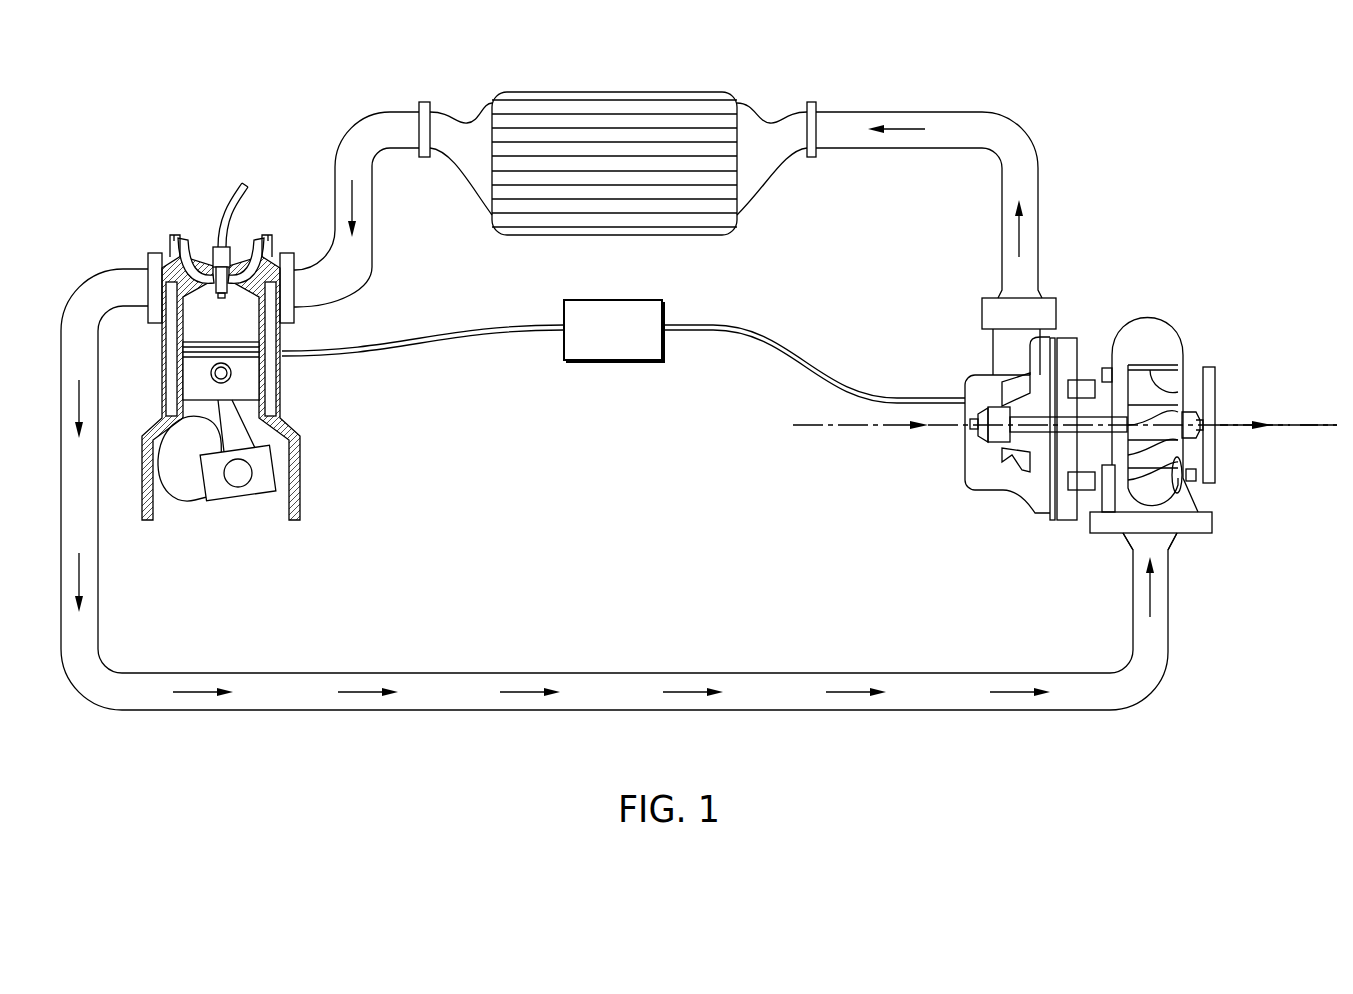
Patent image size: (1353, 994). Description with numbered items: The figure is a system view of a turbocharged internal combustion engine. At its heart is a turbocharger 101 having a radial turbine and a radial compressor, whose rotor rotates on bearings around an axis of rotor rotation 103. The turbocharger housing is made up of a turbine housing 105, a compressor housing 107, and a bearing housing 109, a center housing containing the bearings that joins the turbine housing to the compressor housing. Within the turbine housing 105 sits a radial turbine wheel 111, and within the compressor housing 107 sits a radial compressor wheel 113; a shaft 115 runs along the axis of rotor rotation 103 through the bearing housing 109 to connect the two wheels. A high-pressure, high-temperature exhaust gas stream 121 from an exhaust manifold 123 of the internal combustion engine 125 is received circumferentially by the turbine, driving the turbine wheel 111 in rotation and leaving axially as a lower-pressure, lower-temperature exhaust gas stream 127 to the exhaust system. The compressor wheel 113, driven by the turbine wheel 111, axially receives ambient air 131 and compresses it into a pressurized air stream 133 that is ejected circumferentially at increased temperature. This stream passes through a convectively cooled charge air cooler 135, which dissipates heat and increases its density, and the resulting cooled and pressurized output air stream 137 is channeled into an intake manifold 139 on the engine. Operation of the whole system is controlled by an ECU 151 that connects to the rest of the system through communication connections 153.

The turbocharger 101 is at (1062, 335).
The axis of rotor rotation 103 is at (1303, 425).
The turbine housing 105 is at (1176, 348).
The compressor housing 107 is at (967, 377).
The bearing housing 109 is at (1085, 378).
The radial turbine wheel 111 is at (1145, 415).
The radial compressor wheel 113 is at (1007, 450).
The shaft 115 is at (1083, 432).
The exhaust gas stream 121 is at (695, 690).
The exhaust manifold 123 is at (250, 351).
The internal combustion engine 125 is at (250, 387).
The lower-pressure exhaust gas stream 127 is at (1238, 425).
The ambient air 131 is at (806, 426).
The pressurized air stream 133 is at (900, 128).
The charge air cooler 135 is at (615, 107).
The cooled and pressurized output air stream 137 is at (347, 200).
The intake manifold 139 is at (290, 306).
The ECU 151 is at (613, 300).
The communication connections 153 is at (745, 342).